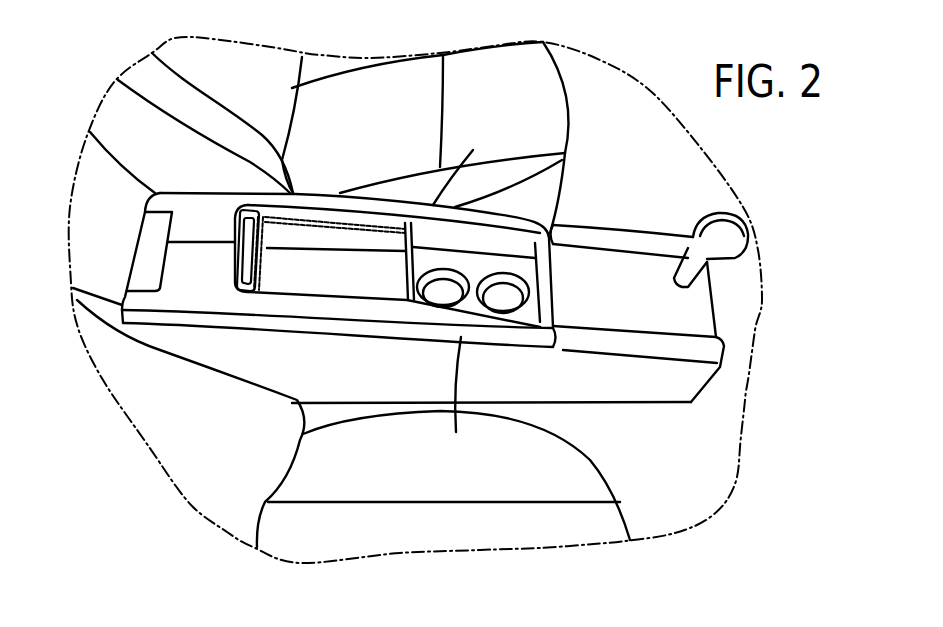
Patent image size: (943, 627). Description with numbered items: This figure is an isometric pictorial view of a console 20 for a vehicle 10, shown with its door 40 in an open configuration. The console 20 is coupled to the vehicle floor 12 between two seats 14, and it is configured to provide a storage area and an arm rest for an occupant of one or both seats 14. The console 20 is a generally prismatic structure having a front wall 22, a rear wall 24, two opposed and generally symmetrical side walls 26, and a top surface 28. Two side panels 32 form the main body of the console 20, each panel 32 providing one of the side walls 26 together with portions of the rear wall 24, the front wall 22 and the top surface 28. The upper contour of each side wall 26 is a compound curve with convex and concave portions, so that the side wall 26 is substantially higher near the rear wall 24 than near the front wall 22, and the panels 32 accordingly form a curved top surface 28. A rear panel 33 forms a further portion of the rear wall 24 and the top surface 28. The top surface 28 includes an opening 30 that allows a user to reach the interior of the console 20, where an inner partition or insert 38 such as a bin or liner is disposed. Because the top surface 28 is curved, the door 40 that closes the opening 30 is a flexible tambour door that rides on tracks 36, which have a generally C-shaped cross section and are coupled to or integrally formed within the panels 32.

The vehicle 10 is at (620, 116).
The vehicle floor 12 is at (634, 184).
The seats 14 is at (373, 126).
The console 20 is at (628, 444).
The front wall 22 is at (713, 298).
The rear wall 24 is at (72, 285).
The side walls 26 is at (473, 151).
The top surface 28 is at (200, 202).
The opening 30 is at (305, 236).
The side panels 32 is at (665, 387).
The rear panel 33 is at (147, 240).
The tracks 36 is at (364, 216).
The insert 38 is at (373, 285).
The door 40 is at (263, 255).